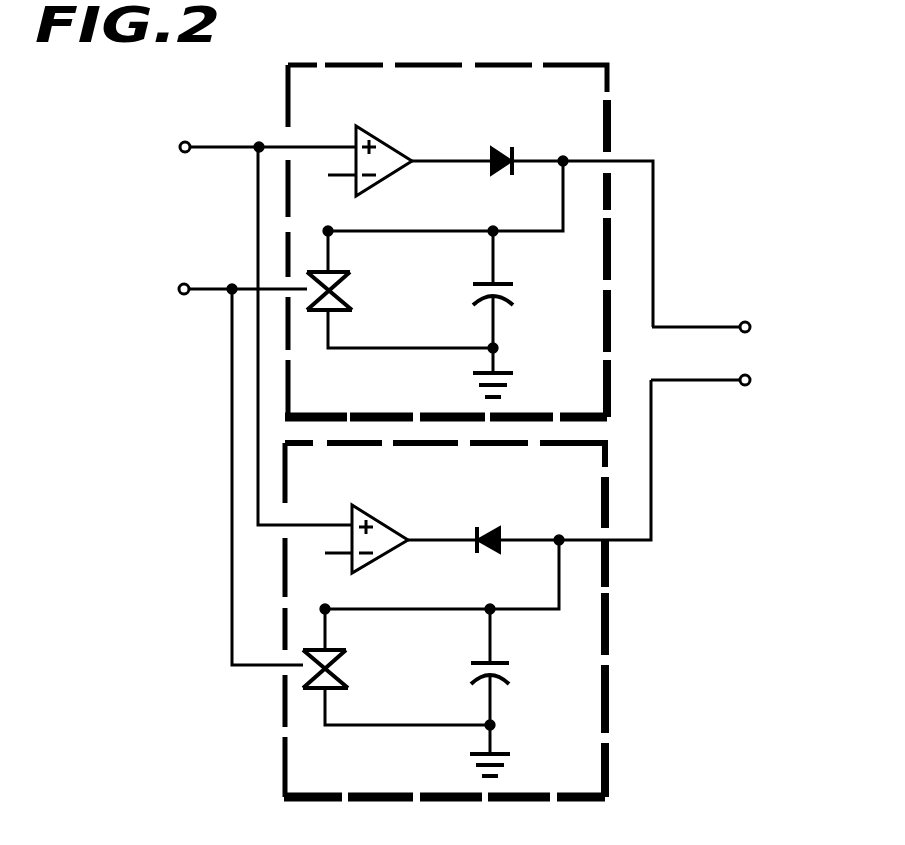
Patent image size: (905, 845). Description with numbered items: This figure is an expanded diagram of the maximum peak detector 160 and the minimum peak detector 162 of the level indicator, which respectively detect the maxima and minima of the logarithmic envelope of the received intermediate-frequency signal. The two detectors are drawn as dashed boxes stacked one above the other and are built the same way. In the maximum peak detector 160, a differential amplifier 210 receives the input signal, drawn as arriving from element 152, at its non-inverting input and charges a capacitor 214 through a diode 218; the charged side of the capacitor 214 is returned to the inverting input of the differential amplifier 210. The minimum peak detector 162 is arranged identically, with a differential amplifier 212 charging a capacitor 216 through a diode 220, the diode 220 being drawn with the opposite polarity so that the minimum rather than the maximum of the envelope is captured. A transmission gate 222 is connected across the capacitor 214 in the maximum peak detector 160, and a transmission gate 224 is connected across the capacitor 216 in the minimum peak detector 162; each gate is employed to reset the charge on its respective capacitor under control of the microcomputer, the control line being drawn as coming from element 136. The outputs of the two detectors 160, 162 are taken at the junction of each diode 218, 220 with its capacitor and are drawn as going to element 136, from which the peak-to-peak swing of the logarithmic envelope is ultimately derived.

The input from stage 152 is at (231, 324).
The connection to circuit 136 is at (454, 463).
The maximum peak detector 160 is at (610, 127).
The minimum peak detector 162 is at (608, 623).
The differential amplifier 210 is at (372, 135).
The differential amplifier 212 is at (369, 514).
The capacitor 214 is at (508, 294).
The capacitor 216 is at (508, 674).
The diode 218 is at (493, 148).
The diode 220 is at (487, 527).
The transmission gate 222 is at (352, 278).
The transmission gate 224 is at (348, 655).